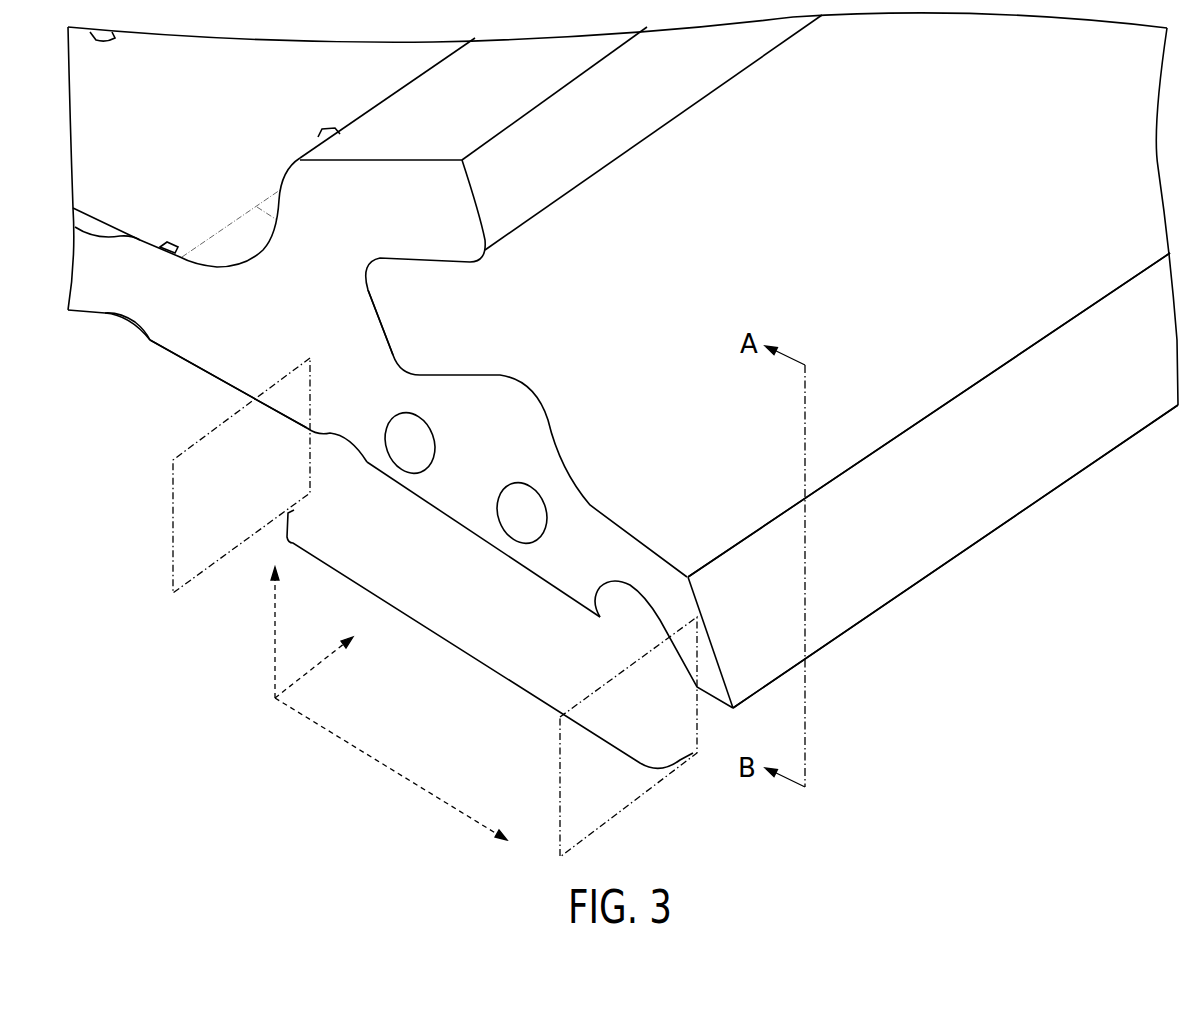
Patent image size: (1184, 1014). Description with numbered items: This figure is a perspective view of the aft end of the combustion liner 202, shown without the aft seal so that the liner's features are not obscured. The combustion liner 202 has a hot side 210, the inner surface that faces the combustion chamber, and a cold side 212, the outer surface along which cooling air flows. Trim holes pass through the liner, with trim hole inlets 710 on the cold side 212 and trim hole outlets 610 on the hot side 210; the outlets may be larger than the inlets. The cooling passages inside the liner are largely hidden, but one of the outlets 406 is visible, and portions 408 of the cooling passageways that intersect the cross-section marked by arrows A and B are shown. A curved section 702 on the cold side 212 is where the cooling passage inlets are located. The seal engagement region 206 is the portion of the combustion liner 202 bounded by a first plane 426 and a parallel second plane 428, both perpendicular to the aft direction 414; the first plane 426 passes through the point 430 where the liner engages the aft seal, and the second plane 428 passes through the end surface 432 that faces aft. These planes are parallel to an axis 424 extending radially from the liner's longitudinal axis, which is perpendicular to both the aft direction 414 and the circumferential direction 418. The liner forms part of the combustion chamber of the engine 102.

The structural assembly 102 is at (172, 620).
The combustion liner 202 is at (172, 347).
The seal engagement region 206 is at (462, 655).
The hot side 210 is at (207, 377).
The cold side 212 is at (142, 238).
The outlets 406 is at (603, 612).
The portions of the cooling passageways 408 is at (417, 470).
The aft direction 414 is at (350, 740).
The circumferential direction 418 is at (298, 675).
The axis 424 is at (270, 606).
The first plane 426 is at (173, 497).
The second plane 428 is at (560, 768).
The point 430 is at (365, 292).
The end surface 432 is at (867, 610).
The trim hole outlets 610 is at (103, 308).
The curved section 702 is at (260, 251).
The trim hole inlets 710 is at (100, 222).